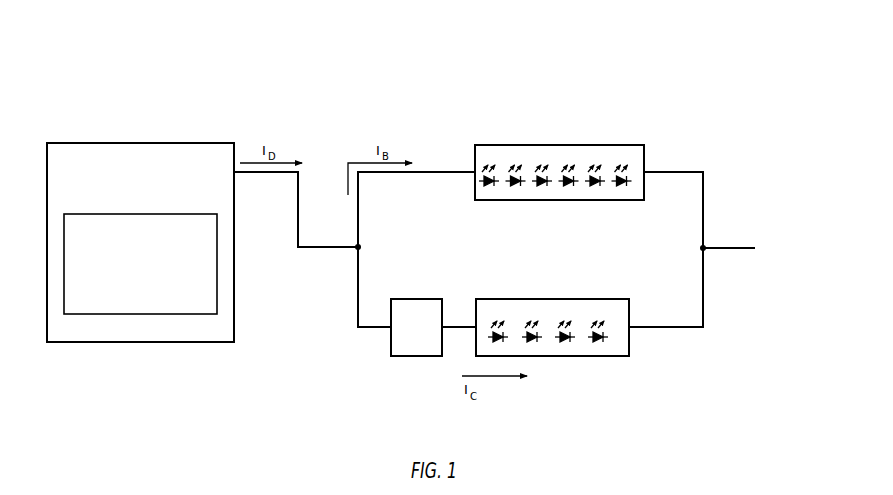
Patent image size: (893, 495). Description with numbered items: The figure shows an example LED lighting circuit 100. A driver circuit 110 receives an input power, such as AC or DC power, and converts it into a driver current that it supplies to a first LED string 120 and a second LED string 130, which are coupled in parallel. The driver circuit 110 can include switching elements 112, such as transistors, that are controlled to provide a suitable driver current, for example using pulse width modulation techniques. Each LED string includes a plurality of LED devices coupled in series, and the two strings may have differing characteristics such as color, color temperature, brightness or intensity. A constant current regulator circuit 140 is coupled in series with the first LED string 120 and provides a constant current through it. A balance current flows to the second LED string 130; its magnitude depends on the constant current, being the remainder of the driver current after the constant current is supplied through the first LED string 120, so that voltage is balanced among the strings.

The LED lighting circuit 100 is at (706, 101).
The driver circuit 110 is at (187, 143).
The switching elements 112 is at (126, 293).
The first LED string 120 is at (554, 299).
The second LED string 130 is at (583, 145).
The constant current regulator circuit 140 is at (412, 356).